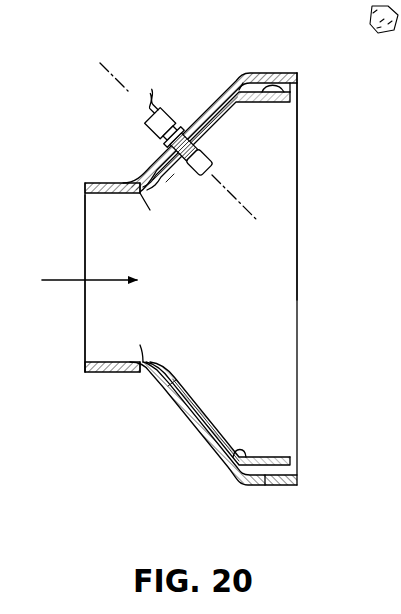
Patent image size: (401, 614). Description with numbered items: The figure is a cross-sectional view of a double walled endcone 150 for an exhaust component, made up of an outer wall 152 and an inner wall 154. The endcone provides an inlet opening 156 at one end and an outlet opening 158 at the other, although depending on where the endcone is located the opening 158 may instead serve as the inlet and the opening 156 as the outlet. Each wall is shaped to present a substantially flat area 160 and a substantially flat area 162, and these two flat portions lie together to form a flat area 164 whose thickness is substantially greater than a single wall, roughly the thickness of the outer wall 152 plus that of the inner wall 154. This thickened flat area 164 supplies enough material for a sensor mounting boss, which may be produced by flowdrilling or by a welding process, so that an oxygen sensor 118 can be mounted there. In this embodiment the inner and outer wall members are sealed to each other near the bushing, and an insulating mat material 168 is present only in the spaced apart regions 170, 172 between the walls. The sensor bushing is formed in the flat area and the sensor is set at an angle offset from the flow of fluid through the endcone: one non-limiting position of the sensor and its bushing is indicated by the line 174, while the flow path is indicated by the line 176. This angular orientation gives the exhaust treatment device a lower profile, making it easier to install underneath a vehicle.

The oxygen sensor 118 is at (158, 129).
The double walled endcone 150 is at (75, 104).
The outer wall 152 is at (103, 182).
The inner wall 154 is at (143, 198).
The inlet opening 156 is at (93, 196).
The outlet opening 158 is at (297, 107).
The substantially flat area 160 is at (205, 113).
The substantially flat area 162 is at (217, 128).
The flat area 164 is at (210, 72).
The insulating mat material 168 is at (242, 85).
The spaced apart region 170 is at (170, 178).
The spaced apart region 172 is at (283, 97).
The line 174 is at (252, 212).
The line 176 is at (100, 285).